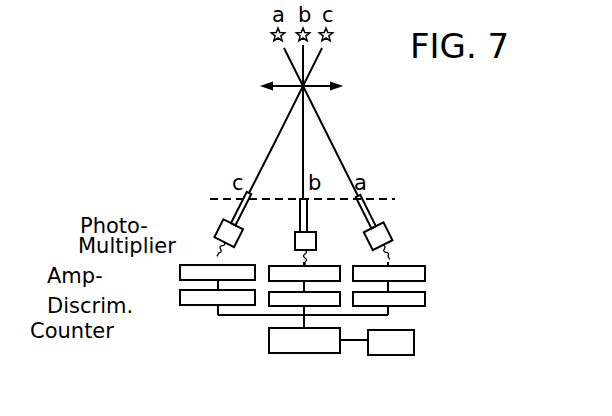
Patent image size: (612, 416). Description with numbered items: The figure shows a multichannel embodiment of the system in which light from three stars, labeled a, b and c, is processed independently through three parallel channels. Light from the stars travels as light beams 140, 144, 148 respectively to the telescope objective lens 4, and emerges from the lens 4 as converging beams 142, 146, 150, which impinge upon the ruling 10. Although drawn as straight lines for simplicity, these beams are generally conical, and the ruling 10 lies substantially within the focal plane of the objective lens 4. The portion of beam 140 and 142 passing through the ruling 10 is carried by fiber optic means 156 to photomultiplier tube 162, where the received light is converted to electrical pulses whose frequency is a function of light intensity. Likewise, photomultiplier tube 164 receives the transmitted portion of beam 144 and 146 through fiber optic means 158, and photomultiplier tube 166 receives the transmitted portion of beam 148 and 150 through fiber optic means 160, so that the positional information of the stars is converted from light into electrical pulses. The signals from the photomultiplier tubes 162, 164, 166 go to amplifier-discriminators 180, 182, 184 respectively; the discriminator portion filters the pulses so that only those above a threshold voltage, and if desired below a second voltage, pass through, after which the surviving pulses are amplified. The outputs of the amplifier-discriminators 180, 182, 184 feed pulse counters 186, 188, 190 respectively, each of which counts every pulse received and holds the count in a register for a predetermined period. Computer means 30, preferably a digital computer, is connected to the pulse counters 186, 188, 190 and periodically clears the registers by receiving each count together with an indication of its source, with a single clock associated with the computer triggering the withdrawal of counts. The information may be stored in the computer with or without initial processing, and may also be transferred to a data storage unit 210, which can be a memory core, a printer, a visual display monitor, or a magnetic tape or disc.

The telescope objective lens 4 is at (318, 92).
The ruling 10 is at (380, 192).
The computer means 30 is at (316, 354).
The light beam 140 is at (288, 50).
The light beam 142 is at (331, 141).
The light beam 144 is at (306, 58).
The light beam 146 is at (282, 138).
The light beam 148 is at (316, 60).
The light beam 150 is at (266, 159).
The fiber optic means 156 is at (371, 212).
The fiber optic means 158 is at (309, 212).
The fiber optic means 160 is at (237, 213).
The photomultiplier tube 162 is at (390, 238).
The photomultiplier tube 164 is at (317, 241).
The photomultiplier tube 166 is at (218, 232).
The amplifier-discriminator 180 is at (426, 273).
The amplifier-discriminator 182 is at (278, 266).
The amplifier-discriminator 184 is at (180, 270).
The pulse counter 186 is at (426, 300).
The pulse counter 188 is at (268, 300).
The pulse counter 190 is at (180, 298).
The data storage unit 210 is at (414, 342).